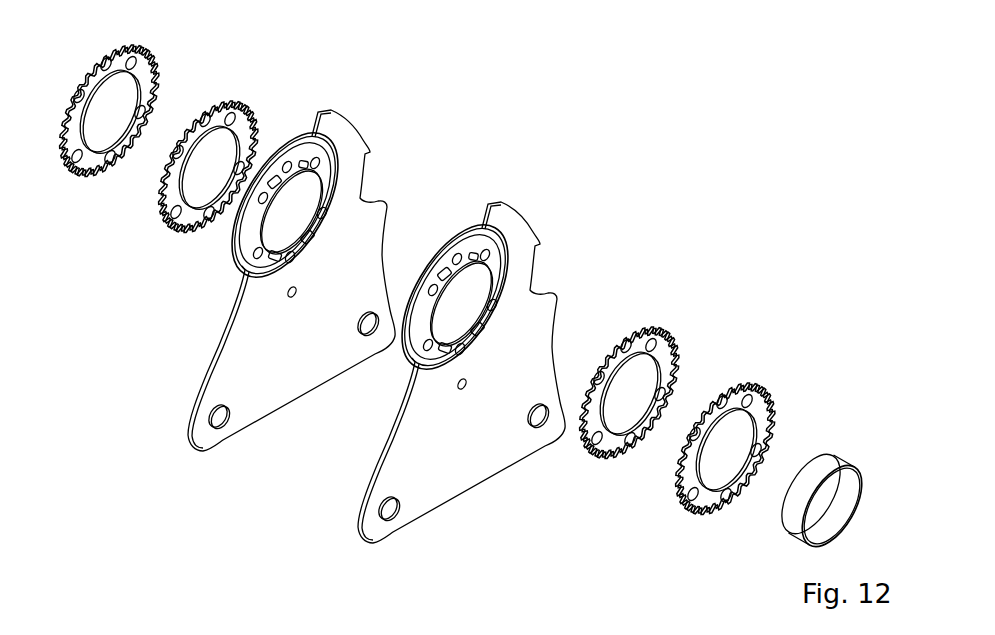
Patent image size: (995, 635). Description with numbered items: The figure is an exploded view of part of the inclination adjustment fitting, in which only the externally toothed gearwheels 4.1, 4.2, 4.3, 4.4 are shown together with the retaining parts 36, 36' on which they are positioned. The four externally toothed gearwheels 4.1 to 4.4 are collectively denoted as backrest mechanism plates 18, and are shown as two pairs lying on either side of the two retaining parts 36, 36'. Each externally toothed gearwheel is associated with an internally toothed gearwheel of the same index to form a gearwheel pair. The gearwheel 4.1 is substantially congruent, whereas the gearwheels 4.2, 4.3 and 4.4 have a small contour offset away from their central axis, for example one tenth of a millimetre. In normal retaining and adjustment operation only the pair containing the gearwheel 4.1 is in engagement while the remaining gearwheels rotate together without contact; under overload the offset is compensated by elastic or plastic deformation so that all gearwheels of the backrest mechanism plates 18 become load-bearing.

The backrest mechanism plates 18 is at (148, 35).
The externally toothed gearwheel 4.1 is at (612, 447).
The externally toothed gearwheel 4.2 is at (705, 500).
The externally toothed gearwheel 4.3 is at (85, 162).
The externally toothed gearwheel 4.4 is at (187, 220).
The retaining part 36 is at (291, 280).
The retaining part 36' is at (461, 372).